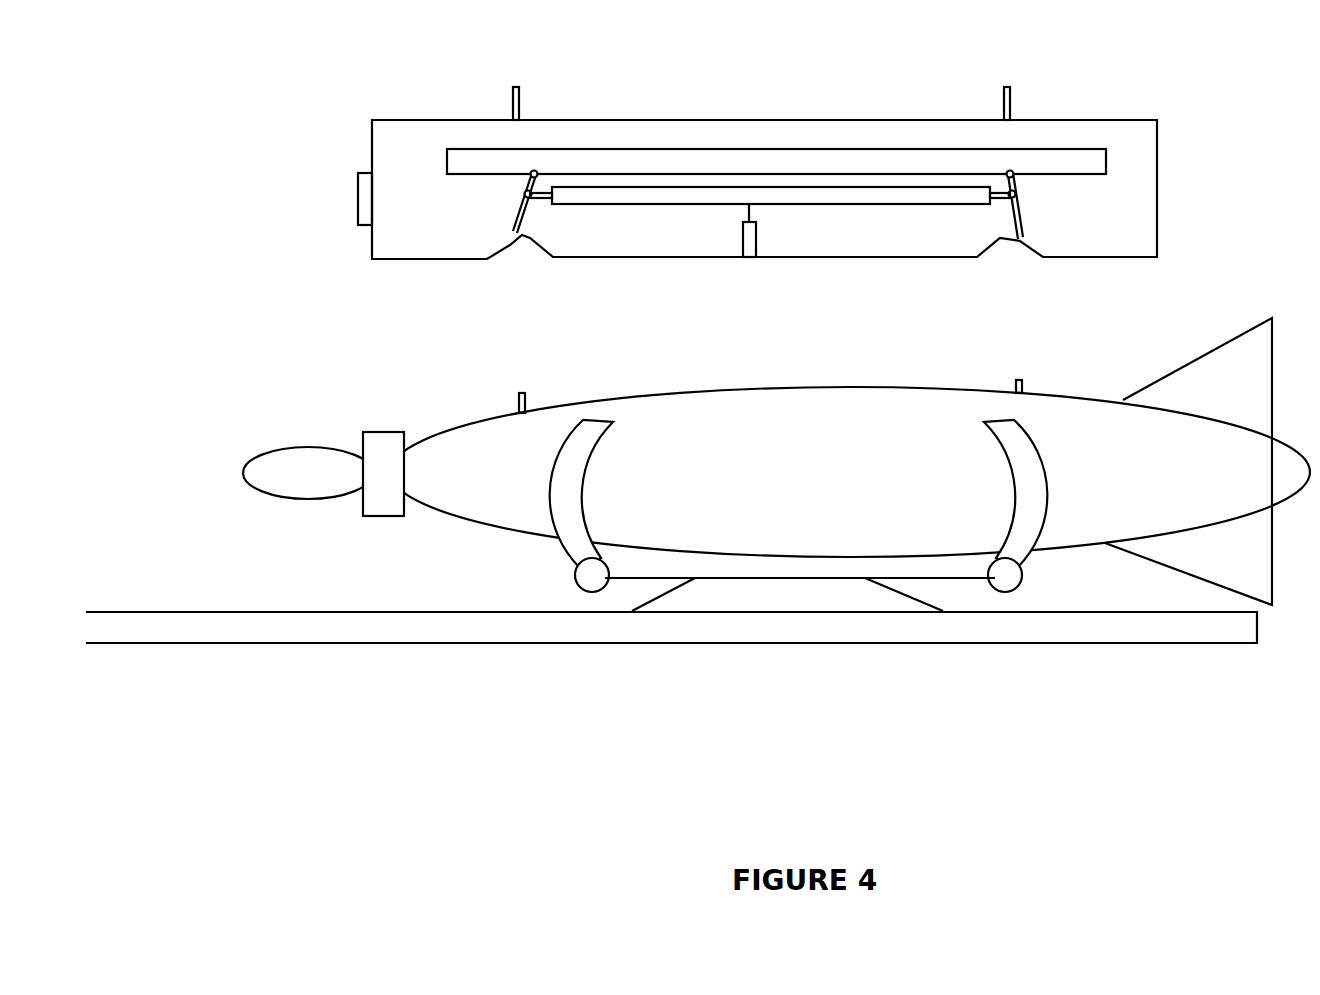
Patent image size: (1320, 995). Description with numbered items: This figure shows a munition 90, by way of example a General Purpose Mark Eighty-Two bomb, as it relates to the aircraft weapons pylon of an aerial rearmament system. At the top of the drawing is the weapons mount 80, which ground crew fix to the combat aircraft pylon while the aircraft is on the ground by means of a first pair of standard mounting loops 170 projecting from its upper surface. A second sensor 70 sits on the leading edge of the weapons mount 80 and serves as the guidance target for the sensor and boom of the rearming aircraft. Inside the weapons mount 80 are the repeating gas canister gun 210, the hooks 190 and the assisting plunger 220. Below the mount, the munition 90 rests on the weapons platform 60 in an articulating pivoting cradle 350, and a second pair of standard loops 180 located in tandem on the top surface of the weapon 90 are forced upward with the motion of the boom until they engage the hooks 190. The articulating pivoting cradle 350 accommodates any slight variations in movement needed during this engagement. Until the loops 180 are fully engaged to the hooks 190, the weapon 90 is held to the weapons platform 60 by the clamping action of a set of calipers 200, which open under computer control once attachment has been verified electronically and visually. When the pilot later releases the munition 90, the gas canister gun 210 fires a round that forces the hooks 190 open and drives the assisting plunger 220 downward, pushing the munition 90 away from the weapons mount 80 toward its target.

The weapons platform 60 is at (349, 644).
The second sensor 70 is at (355, 208).
The weapons mount 80 is at (371, 139).
The munition 90 is at (450, 430).
The first pair of standard mounting loops 170 is at (512, 104).
The second pair of standard loops 180 is at (510, 397).
The hooks 190 is at (523, 241).
The calipers 200 is at (598, 456).
The repeating gas canister gun 210 is at (1088, 147).
The assisting plunger 220 is at (760, 237).
The articulating pivoting cradle 350 is at (766, 590).